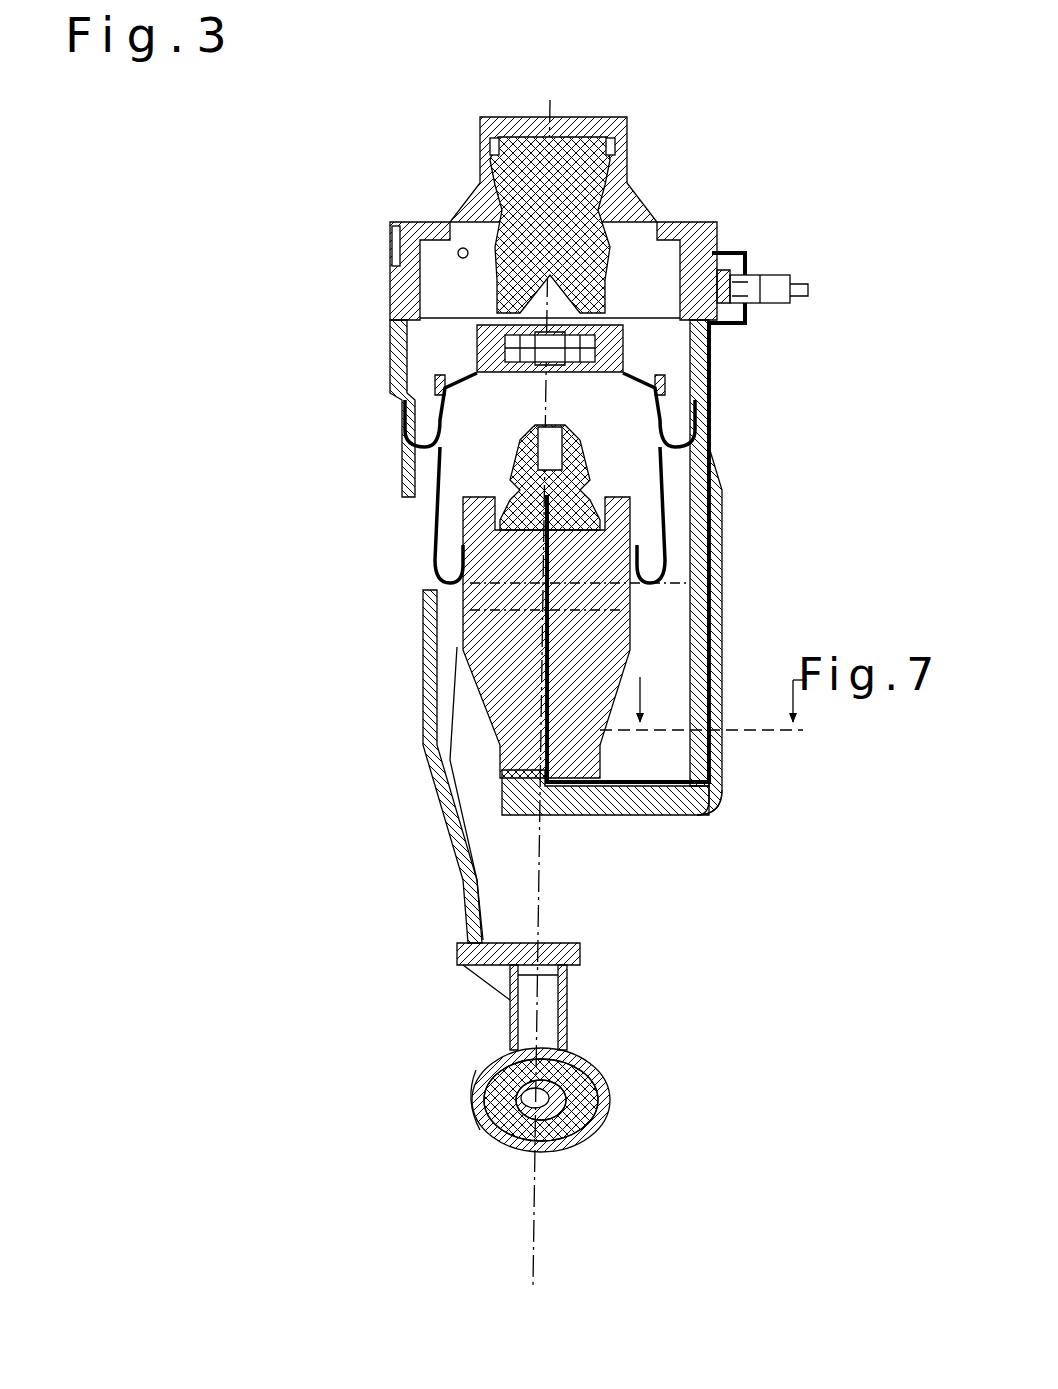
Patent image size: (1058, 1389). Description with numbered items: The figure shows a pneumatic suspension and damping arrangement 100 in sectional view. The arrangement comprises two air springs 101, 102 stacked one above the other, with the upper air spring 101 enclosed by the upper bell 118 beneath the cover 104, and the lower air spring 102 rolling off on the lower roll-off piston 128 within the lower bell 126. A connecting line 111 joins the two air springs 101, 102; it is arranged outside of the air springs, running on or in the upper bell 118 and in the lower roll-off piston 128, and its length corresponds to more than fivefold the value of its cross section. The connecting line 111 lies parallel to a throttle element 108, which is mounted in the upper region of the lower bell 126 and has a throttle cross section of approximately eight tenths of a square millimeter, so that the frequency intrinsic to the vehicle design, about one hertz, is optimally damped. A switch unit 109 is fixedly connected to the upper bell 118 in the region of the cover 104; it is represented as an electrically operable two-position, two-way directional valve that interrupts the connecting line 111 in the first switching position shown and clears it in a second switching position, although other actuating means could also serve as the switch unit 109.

The suspension and damping arrangement 100 is at (525, 64).
The air spring 101 is at (430, 348).
The air spring 102 is at (470, 477).
The cover 104 is at (628, 172).
The throttle element 108 is at (598, 375).
The switch unit 109 is at (765, 273).
The connecting line 111 is at (712, 353).
The upper bell 118 is at (722, 493).
The lower bell 126 is at (423, 748).
The lower roll-off piston 128 is at (718, 793).